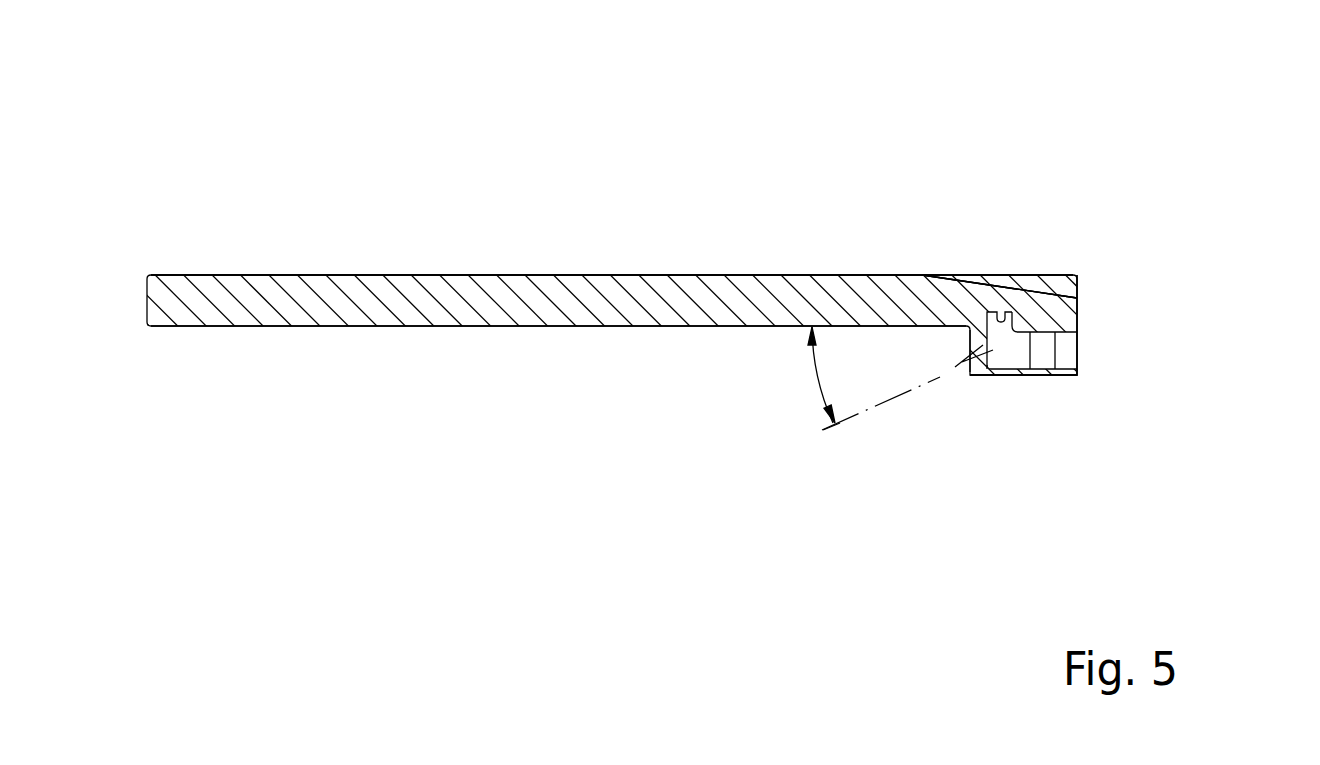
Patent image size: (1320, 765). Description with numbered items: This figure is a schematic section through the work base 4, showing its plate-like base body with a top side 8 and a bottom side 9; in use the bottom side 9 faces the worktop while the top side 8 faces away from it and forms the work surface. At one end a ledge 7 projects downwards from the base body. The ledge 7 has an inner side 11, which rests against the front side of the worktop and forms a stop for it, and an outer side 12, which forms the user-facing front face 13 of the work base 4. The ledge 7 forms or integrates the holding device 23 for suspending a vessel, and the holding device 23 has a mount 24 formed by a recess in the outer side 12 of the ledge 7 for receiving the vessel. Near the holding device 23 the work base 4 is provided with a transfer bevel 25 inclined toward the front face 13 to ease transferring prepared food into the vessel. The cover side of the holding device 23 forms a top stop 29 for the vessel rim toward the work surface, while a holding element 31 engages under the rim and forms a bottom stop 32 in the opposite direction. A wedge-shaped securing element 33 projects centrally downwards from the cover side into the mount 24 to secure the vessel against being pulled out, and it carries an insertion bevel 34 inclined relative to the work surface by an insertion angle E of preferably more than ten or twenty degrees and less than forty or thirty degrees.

The work base 4 is at (340, 182).
The ledge 7 is at (965, 364).
The top side 8 is at (445, 275).
The bottom side 9 is at (443, 327).
The inner side 11 is at (970, 341).
The outer side 12 is at (1080, 292).
The front face 13 is at (1023, 325).
The holding device 23 is at (1074, 292).
The mount 24 is at (999, 286).
The transfer bevel 25 is at (990, 276).
The top stop 29 is at (1015, 325).
The holding element 31 is at (1067, 355).
The bottom stop 32 is at (1078, 325).
The securing element 33 is at (1013, 340).
The insertion bevel 34 is at (1046, 300).
The insertion angle E is at (818, 378).